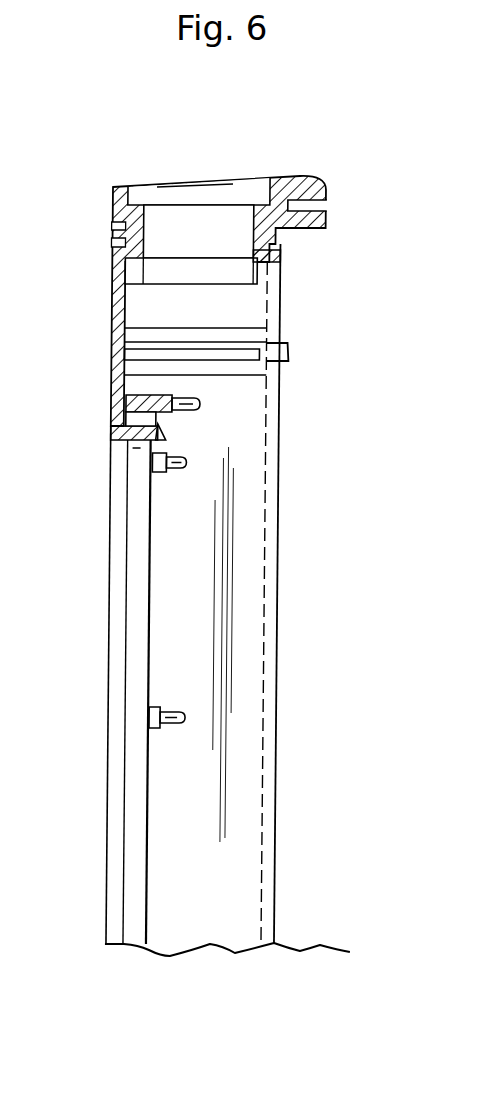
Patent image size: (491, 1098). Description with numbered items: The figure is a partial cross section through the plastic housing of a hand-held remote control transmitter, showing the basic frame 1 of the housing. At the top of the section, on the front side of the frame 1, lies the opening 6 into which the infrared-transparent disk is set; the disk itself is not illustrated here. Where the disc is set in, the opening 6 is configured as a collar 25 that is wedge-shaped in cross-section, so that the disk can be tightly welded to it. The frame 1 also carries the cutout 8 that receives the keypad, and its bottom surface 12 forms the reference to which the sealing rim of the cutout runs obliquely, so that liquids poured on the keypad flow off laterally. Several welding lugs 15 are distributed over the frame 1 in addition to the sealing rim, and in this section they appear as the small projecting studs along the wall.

The basic frame 1 is at (126, 404).
The opening 6 is at (186, 194).
The cutout 8 is at (135, 612).
The bottom surface 12 is at (326, 192).
The welding lugs 15 is at (152, 722).
The collar 25 is at (141, 207).